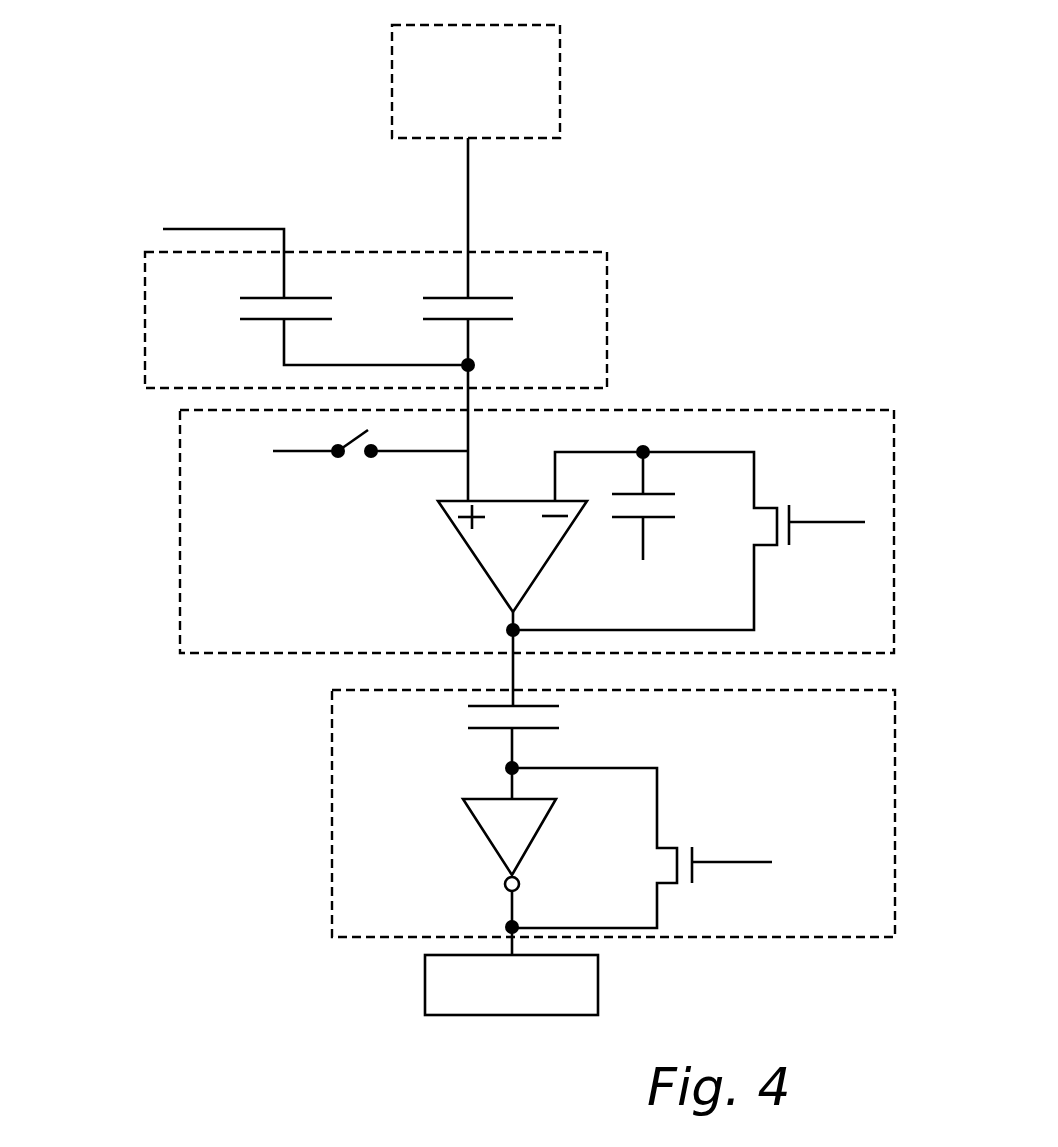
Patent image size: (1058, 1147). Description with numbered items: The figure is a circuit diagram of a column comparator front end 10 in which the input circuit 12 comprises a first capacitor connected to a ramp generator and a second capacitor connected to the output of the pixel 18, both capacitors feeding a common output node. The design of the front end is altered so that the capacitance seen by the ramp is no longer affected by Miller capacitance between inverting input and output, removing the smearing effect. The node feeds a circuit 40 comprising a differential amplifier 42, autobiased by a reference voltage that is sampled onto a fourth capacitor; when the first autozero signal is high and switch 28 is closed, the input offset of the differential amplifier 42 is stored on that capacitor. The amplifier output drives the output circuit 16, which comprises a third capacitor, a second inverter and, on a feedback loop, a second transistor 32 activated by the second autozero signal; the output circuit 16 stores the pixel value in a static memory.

The image sensor readout circuit 10 is at (670, 183).
The input circuit 12 is at (580, 342).
The output circuit 16 is at (544, 822).
The pixel 18 is at (535, 70).
The switch 28 is at (787, 502).
The second transistor 32 is at (693, 842).
The circuit 40 is at (471, 508).
The differential amplifier 42 is at (492, 545).